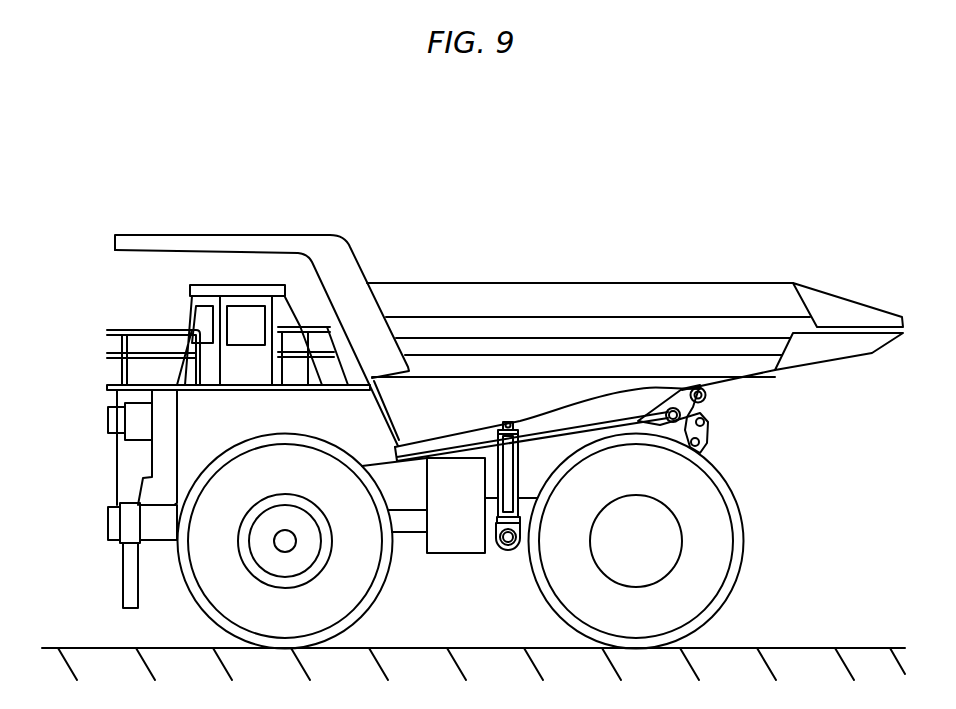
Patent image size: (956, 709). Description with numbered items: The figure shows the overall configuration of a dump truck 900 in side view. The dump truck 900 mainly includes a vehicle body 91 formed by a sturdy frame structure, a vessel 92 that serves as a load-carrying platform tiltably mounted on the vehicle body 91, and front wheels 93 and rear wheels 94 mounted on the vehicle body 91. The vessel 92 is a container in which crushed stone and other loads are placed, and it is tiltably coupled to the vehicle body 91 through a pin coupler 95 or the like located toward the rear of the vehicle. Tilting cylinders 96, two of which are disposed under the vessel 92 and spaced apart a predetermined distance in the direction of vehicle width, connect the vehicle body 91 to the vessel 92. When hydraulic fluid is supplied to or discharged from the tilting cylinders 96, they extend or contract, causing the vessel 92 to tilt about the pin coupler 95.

The dump truck 900 is at (504, 226).
The vehicle body 91 is at (190, 452).
The vessel 92 is at (578, 297).
The front wheels 93 is at (200, 610).
The rear wheels 94 is at (748, 512).
The pin coupler 95 is at (703, 389).
The tilting cylinders 96 is at (503, 557).